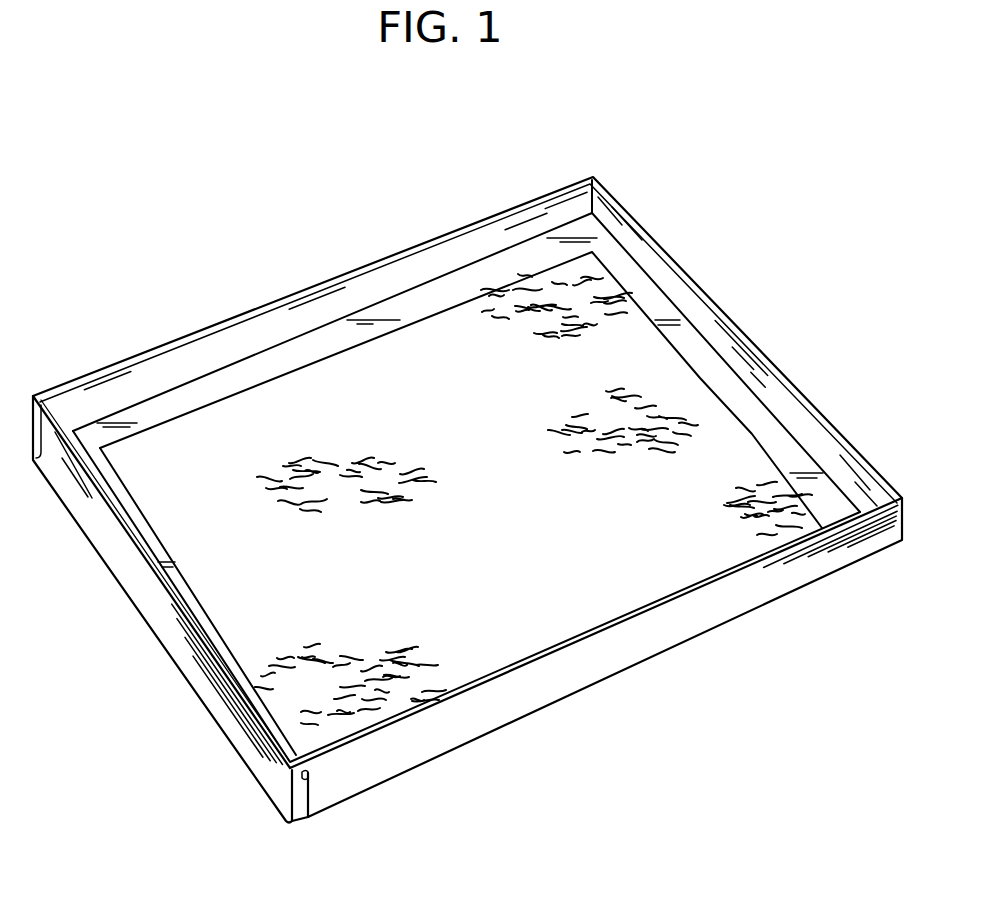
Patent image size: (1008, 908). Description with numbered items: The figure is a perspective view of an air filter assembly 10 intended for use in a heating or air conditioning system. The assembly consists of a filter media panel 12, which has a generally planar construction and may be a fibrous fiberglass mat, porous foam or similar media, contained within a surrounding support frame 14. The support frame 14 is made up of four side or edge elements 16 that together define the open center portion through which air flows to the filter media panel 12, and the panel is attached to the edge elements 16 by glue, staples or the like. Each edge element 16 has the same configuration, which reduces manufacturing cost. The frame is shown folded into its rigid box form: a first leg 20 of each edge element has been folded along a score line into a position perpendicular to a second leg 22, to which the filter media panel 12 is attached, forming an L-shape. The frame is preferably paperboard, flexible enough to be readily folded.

The air filter assembly 10 is at (467, 462).
The filter media panel 12 is at (461, 503).
The support frame 14 is at (782, 357).
The edge elements 16 is at (233, 337).
The first leg 20 is at (407, 270).
The second leg 22 is at (505, 262).